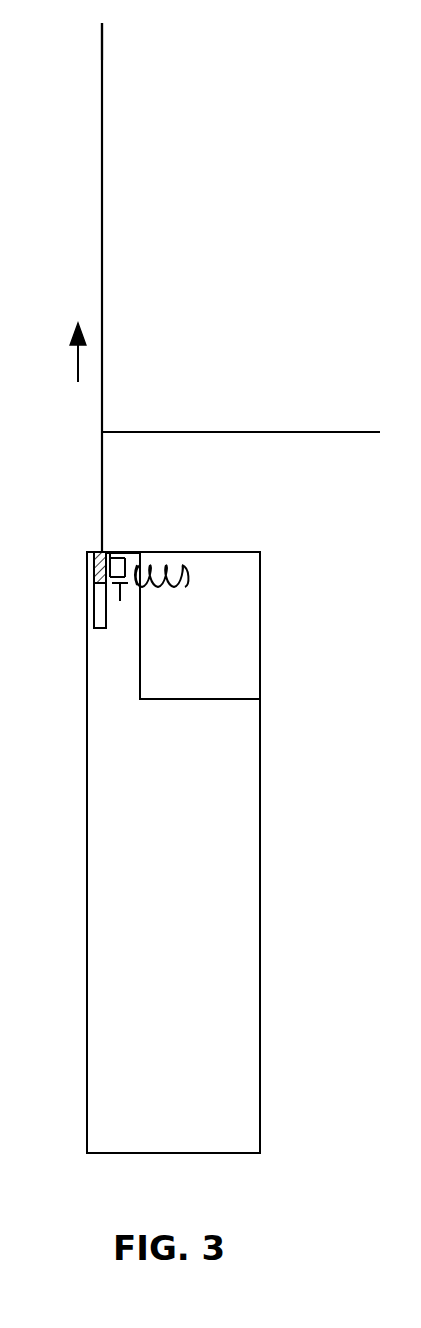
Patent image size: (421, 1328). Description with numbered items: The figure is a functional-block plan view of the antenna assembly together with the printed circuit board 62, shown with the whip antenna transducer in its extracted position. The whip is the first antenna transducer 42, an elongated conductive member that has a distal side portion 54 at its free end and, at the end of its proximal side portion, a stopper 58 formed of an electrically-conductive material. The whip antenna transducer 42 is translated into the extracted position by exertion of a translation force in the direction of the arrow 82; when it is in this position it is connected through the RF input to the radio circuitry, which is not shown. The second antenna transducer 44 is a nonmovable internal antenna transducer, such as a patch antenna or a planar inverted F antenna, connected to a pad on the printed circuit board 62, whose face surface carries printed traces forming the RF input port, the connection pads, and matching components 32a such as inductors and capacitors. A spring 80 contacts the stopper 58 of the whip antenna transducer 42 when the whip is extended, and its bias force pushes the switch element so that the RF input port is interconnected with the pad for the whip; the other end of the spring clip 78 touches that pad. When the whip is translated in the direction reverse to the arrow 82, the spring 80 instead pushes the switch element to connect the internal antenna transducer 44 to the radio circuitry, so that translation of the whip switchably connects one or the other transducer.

The distal side portion 54 is at (105, 52).
The first antenna transducer 42 is at (103, 207).
The arrow 82 is at (75, 357).
The stopper 58 is at (103, 550).
The capacitor 32a is at (125, 552).
The second antenna transducer 44 is at (260, 575).
The spring 80 is at (185, 586).
The spring clip 78 is at (92, 607).
The printed circuit board 62 is at (262, 862).